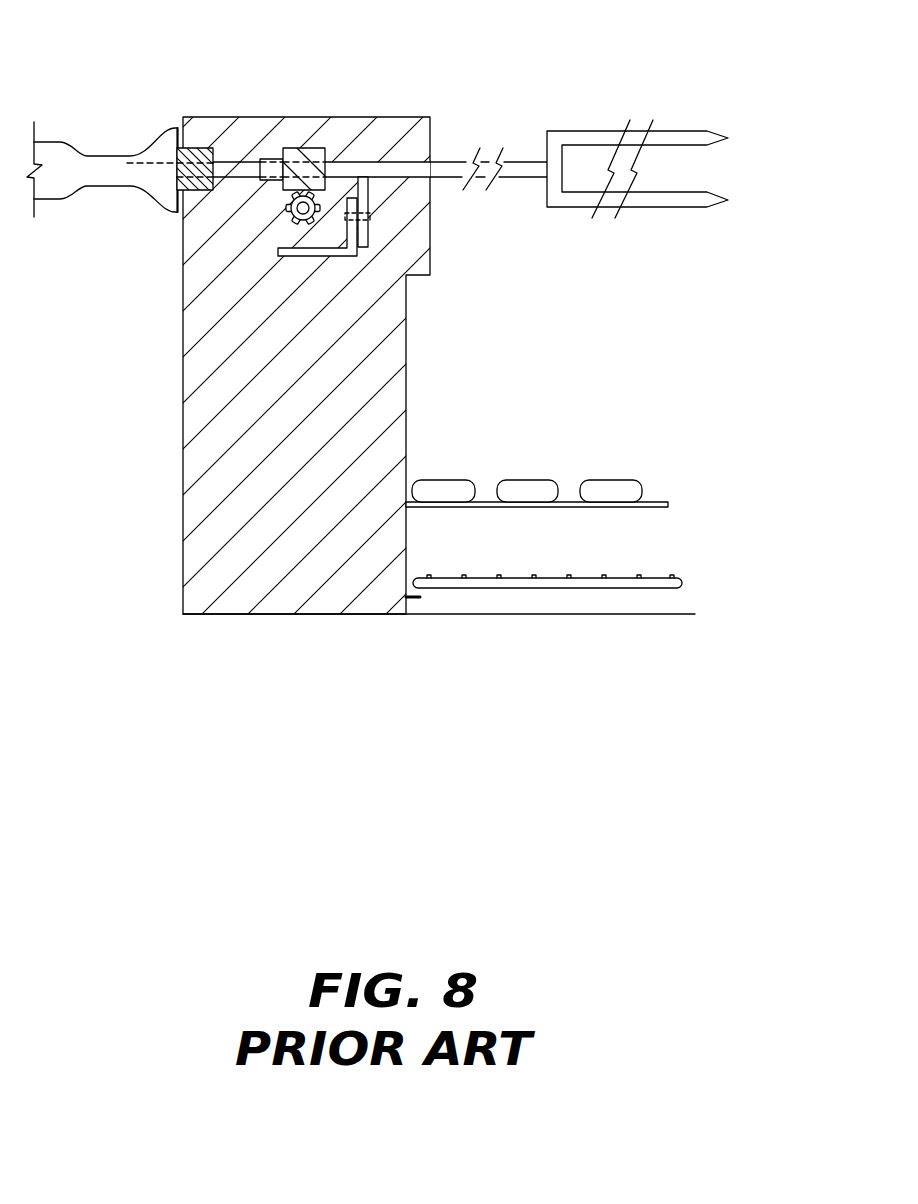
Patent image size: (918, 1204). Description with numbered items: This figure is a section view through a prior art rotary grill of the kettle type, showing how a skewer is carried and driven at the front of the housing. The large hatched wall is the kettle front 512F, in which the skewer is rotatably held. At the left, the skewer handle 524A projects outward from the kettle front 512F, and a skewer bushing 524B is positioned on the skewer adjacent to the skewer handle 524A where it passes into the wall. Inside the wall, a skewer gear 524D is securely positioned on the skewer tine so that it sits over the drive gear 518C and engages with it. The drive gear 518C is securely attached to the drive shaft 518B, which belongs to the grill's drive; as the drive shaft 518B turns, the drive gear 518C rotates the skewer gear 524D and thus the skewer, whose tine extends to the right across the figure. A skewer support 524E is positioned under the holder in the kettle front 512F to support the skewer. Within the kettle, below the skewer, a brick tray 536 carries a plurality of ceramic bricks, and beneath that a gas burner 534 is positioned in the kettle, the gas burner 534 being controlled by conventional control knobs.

The skewer handle 524A is at (102, 155).
The skewer bushing 524B is at (207, 148).
The skewer gear 524D is at (308, 148).
The skewer support 524E is at (368, 242).
The drive shaft 518B is at (295, 212).
The drive gear 518C is at (296, 225).
The kettle front 512F is at (407, 422).
The brick tray 536 is at (658, 500).
The gas burner 534 is at (677, 575).